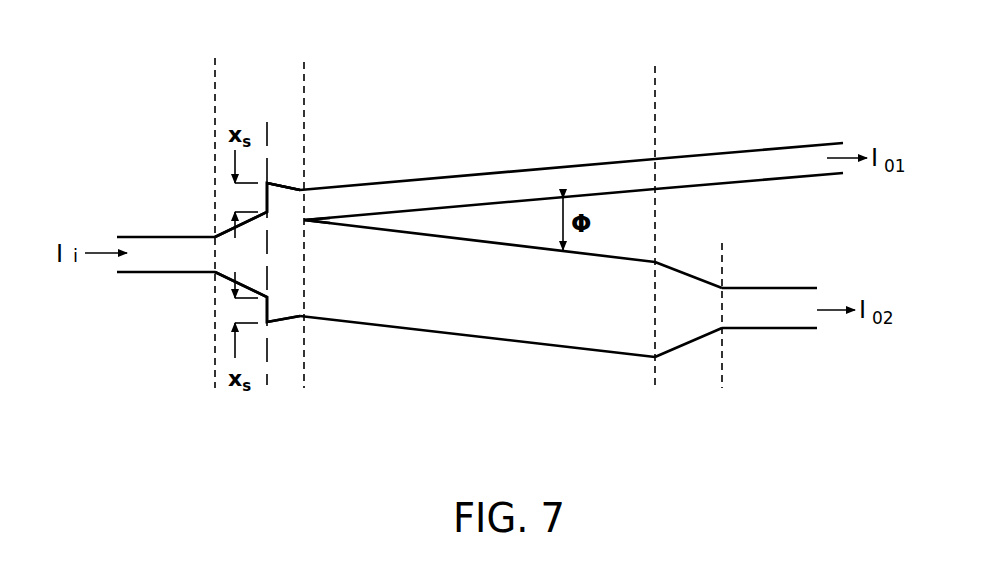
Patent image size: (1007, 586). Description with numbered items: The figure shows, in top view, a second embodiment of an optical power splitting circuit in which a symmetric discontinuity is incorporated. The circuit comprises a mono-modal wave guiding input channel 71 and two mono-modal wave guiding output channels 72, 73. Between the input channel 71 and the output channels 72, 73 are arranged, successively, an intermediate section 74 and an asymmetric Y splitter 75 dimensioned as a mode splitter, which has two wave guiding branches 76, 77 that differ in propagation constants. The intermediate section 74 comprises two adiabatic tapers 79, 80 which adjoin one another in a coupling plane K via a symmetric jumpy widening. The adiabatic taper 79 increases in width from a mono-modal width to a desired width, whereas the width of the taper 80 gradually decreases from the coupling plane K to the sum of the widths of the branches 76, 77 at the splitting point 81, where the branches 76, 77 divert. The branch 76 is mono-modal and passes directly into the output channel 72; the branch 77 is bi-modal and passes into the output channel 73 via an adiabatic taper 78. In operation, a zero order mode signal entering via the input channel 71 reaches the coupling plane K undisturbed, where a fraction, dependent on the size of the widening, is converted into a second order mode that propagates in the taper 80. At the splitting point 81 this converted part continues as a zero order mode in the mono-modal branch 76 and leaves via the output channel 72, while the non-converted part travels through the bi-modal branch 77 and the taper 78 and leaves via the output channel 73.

The input channel 71 is at (163, 252).
The output channel 72 is at (723, 172).
The output channel 73 is at (792, 310).
The intermediate section 74 is at (305, 66).
The asymmetric Y splitter 75 is at (655, 66).
The wave guiding branch 76 is at (542, 177).
The wave guiding branch 77 is at (542, 312).
The adiabatic taper 78 is at (680, 312).
The adiabatic taper 79 is at (248, 252).
The adiabatic taper 80 is at (280, 198).
The splitting point 81 is at (304, 220).
The coupling plane K is at (268, 350).